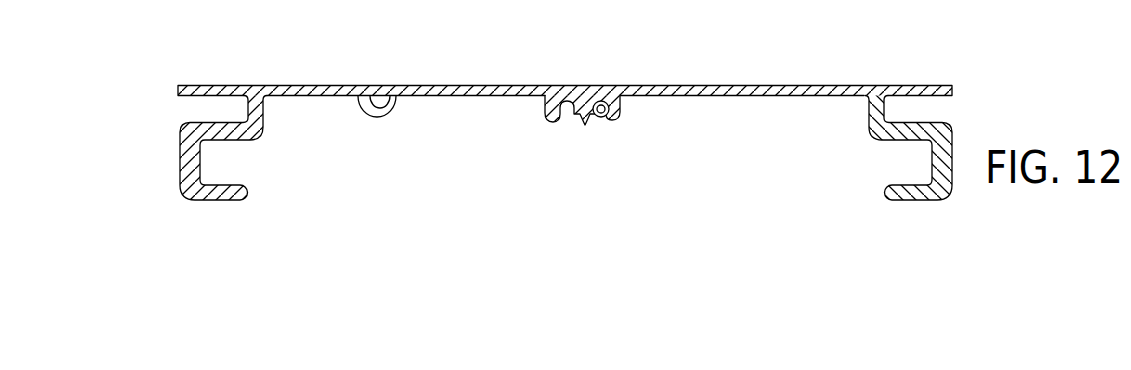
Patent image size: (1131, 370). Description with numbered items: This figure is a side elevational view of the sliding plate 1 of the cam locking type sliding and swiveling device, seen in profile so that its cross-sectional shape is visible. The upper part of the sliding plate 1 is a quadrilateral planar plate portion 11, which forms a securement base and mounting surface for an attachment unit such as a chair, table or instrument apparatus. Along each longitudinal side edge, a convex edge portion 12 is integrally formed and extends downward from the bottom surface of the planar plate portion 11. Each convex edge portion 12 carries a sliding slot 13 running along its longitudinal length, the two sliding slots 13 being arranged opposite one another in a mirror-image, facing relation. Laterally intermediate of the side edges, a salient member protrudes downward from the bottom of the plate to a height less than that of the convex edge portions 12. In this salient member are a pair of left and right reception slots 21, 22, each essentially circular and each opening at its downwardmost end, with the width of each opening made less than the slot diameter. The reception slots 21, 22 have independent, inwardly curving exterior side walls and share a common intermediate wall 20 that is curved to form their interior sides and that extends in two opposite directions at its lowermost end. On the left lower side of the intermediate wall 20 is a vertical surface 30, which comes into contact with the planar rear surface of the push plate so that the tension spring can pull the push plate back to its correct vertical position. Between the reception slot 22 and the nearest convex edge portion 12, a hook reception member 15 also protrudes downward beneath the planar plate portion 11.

The sliding plate 1 is at (524, 86).
The planar plate portion 11 is at (793, 85).
The convex edge portion 12 is at (178, 152).
The sliding slot 13 is at (237, 174).
The hook reception member 15 is at (396, 105).
The intermediate wall 20 is at (586, 127).
The left reception slot 21 is at (568, 118).
The right reception slot 22 is at (603, 118).
The vertical surface 30 is at (604, 128).